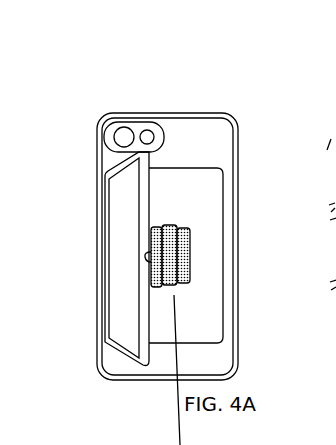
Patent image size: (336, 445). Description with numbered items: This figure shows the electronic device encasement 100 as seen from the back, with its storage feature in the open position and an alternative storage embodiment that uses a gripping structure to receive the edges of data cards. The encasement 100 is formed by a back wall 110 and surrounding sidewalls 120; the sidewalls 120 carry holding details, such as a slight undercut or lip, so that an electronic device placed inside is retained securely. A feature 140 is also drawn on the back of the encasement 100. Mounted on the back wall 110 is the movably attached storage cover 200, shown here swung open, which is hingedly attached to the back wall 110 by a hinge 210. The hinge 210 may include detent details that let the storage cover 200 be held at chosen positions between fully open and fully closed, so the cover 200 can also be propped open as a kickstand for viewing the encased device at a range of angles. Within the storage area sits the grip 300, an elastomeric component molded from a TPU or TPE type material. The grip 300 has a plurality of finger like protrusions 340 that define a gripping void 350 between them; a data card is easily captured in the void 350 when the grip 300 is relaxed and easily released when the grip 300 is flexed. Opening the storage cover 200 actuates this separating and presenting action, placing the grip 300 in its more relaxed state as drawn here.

The encasement 100 is at (100, 93).
The back wall 110 is at (203, 133).
The sidewalls 120 is at (97, 147).
The camera opening 140 is at (167, 112).
The storage cover 200 is at (115, 191).
The hinge 210 is at (107, 248).
The grip 300 is at (227, 227).
The finger like protrusions 340 is at (187, 260).
The gripping void 350 is at (188, 228).